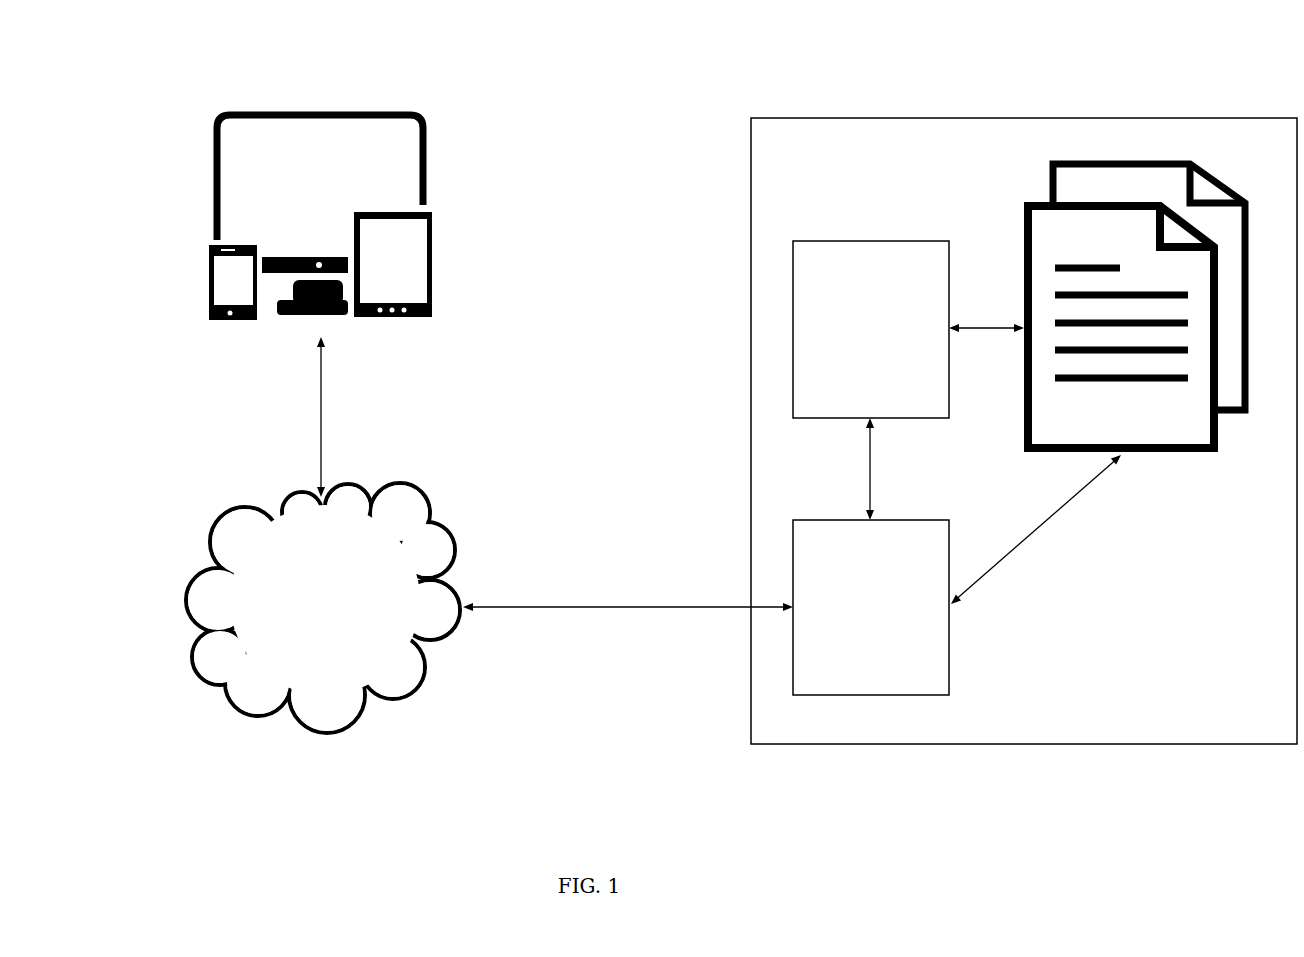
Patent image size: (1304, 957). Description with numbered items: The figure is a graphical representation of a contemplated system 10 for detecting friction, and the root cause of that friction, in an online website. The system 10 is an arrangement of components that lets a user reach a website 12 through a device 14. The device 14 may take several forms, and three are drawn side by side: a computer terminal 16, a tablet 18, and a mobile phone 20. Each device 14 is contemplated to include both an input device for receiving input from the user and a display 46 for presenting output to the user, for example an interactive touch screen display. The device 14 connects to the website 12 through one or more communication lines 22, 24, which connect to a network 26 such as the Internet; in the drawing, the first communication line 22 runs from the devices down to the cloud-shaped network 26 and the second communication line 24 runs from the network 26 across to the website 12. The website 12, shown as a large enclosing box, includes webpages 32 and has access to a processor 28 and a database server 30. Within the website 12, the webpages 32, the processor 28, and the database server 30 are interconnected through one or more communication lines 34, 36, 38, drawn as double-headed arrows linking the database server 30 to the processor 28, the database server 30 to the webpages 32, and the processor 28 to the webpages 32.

The system 10 is at (673, 165).
The website 12 is at (751, 242).
The device 14 is at (242, 360).
The computer terminal 16 is at (423, 163).
The tablet 18 is at (433, 262).
The mobile phone 20 is at (210, 275).
The communication line 22 is at (323, 428).
The communication line 24 is at (570, 615).
The network 26 is at (445, 527).
The processor 28 is at (874, 698).
The database server 30 is at (793, 343).
The webpages 32 is at (1107, 160).
The communication line 34 is at (865, 461).
The communication line 36 is at (983, 327).
The communication line 38 is at (1033, 531).
The display 46 is at (233, 273).